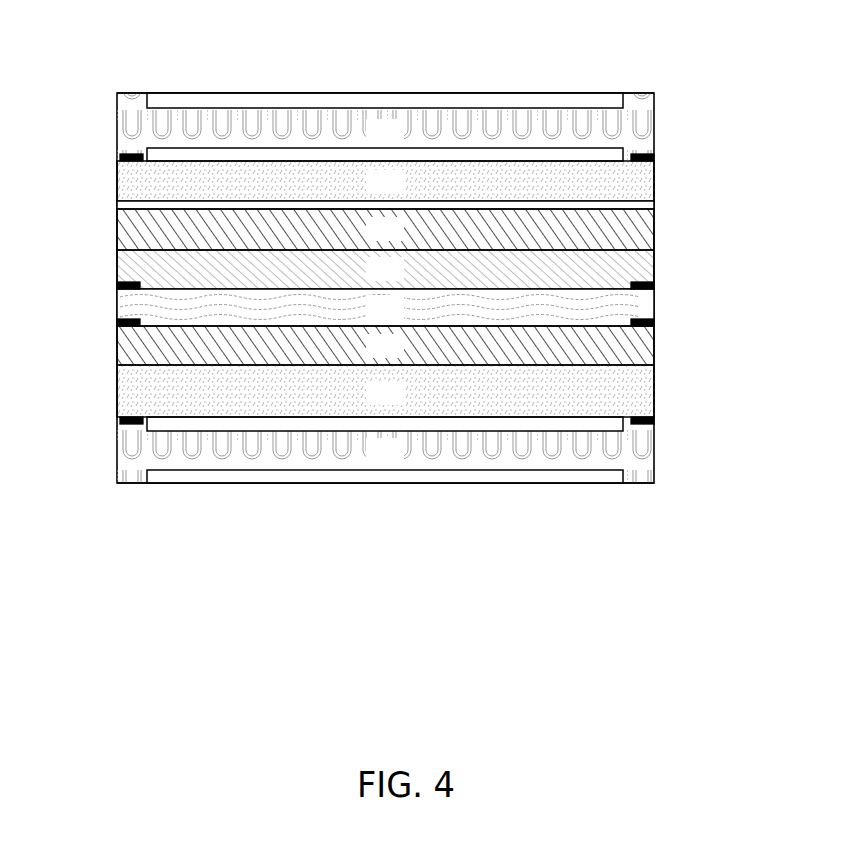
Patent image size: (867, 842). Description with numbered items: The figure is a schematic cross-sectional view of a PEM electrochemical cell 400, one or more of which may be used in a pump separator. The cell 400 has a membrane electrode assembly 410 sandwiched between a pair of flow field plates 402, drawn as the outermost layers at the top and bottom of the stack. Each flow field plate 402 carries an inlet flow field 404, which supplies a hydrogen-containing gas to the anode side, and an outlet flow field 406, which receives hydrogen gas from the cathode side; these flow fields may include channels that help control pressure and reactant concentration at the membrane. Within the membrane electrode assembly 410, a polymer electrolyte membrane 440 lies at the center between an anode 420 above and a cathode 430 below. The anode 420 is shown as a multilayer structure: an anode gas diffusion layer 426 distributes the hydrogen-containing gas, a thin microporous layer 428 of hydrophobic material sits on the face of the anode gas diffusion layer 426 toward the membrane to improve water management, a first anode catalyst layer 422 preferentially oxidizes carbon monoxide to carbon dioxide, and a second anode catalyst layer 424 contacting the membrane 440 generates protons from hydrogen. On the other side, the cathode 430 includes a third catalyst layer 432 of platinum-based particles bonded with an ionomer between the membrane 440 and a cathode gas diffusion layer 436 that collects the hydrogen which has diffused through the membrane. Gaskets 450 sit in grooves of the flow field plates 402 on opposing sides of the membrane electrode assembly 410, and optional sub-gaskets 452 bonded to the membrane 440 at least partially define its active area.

The PEM electrochemical cell 400 is at (708, 699).
The flow field plates 402 is at (385, 288).
The inlet flow field 404 is at (547, 148).
The outlet flow field 406 is at (438, 93).
The membrane electrode assembly 410 is at (411, 288).
The anode 420 is at (378, 224).
The first anode catalyst layer 422 is at (385, 229).
The second anode catalyst layer 424 is at (385, 269).
The anode gas diffusion layer 426 is at (385, 181).
The microporous layer 428 is at (118, 205).
The cathode 430 is at (419, 371).
The third catalyst layer 432 is at (385, 345).
The cathode gas diffusion layer 436 is at (385, 391).
The polymer electrolyte membrane 440 is at (385, 307).
The gaskets 450 is at (118, 156).
The sub-gaskets 452 is at (118, 324).